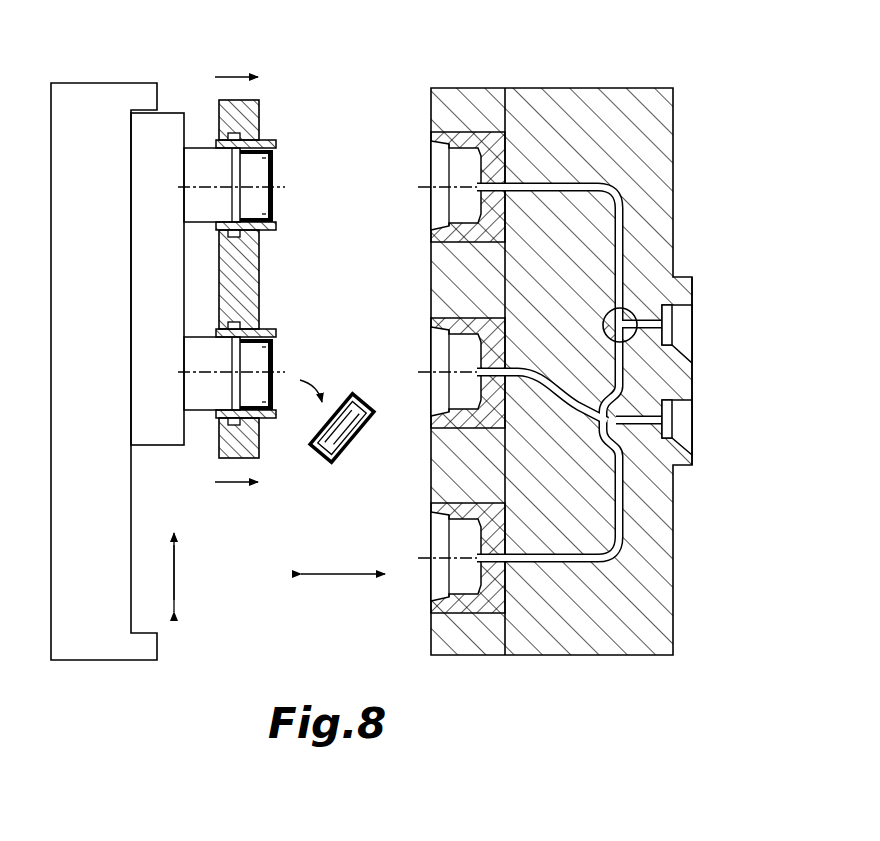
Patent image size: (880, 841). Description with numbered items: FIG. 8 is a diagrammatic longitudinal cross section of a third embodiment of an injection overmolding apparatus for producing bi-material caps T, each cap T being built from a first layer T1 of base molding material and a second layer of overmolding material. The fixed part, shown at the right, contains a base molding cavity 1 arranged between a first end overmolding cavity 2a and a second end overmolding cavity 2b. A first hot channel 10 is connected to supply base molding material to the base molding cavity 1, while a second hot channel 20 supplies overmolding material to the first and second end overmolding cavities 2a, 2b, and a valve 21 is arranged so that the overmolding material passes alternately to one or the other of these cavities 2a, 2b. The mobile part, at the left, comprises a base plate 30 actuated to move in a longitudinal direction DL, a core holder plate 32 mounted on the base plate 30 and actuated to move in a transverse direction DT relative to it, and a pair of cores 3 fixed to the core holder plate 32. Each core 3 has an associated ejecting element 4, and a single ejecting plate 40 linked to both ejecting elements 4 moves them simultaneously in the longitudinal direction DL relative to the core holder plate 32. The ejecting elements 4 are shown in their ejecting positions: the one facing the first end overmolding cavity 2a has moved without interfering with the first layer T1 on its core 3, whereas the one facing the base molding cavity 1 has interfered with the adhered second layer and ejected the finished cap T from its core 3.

The base plate 30 is at (90, 105).
The core holder plate 32 is at (170, 120).
The ejecting plate 40 is at (252, 117).
The ejecting element 4 is at (266, 230).
The first layer T1 is at (273, 170).
The core 3 is at (272, 198).
The bi-material cap T is at (342, 447).
The transverse direction DT is at (178, 572).
The longitudinal direction DL is at (343, 574).
The first hot channel 10 is at (564, 371).
The first end overmolding cavity 2a is at (455, 170).
The base molding cavity 1 is at (455, 355).
The second end overmolding cavity 2b is at (455, 573).
The second hot channel 20 is at (645, 320).
The valve 21 is at (625, 333).